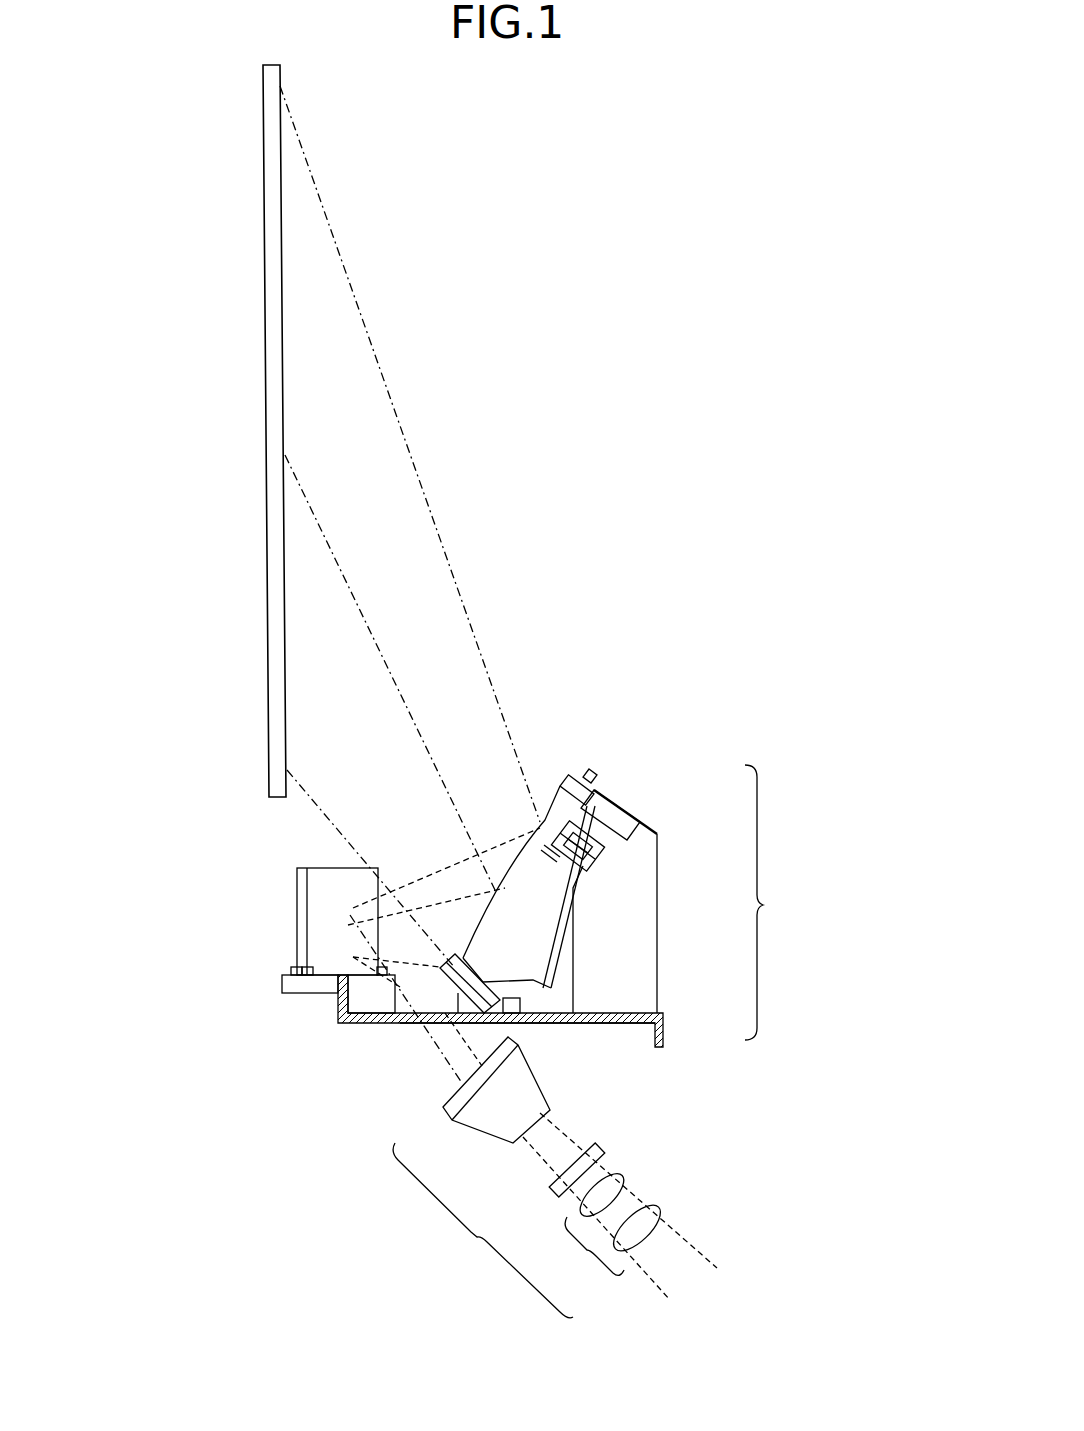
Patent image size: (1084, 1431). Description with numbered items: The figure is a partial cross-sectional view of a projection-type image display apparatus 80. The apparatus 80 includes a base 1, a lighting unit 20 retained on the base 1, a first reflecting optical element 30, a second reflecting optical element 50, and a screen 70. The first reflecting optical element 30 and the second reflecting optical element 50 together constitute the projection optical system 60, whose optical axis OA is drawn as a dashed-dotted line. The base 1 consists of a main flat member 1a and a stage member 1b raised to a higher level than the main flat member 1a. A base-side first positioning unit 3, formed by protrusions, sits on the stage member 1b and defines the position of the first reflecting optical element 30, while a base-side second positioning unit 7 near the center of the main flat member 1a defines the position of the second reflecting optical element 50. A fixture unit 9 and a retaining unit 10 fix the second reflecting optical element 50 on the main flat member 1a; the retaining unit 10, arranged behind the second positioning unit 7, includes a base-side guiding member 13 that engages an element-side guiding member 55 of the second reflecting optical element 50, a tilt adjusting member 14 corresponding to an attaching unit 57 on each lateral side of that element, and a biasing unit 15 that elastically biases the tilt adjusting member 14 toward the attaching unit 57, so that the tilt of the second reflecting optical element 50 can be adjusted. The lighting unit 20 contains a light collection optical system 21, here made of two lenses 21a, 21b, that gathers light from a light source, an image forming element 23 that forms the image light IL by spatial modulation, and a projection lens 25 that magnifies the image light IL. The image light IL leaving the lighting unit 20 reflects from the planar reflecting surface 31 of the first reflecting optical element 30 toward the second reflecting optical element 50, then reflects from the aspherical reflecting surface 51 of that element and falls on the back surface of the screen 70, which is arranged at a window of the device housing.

The projection-type image display apparatus 80 is at (563, 150).
The screen 70 is at (263, 509).
The projection optical system 60 is at (629, 873).
The retaining unit 10 is at (665, 915).
The base-side guiding member 13 is at (615, 808).
The tilt adjusting member 14 is at (602, 871).
The biasing unit 15 is at (558, 859).
The attaching unit 57 is at (607, 848).
The element-side guiding member 55 is at (588, 768).
The reflecting surface 51 is at (533, 863).
The second reflecting optical element 50 is at (581, 847).
The fixture unit 9 is at (447, 967).
The base-side second positioning unit 7 is at (525, 1014).
The base 1 is at (437, 1028).
The main flat member 1a is at (610, 1024).
The stage member 1b is at (282, 984).
The base-side first positioning unit 3 is at (283, 964).
The first reflecting optical element 30 is at (376, 900).
The reflecting surface 31 is at (321, 878).
The projection lens 25 is at (468, 1127).
The image forming element 23 is at (600, 1152).
The light collection optical system 21 is at (639, 1205).
The lens 21a is at (647, 1211).
The lens 21b is at (618, 1177).
The lighting unit 20 is at (555, 1177).
The image light IL is at (384, 361).
The optical axis OA is at (397, 678).